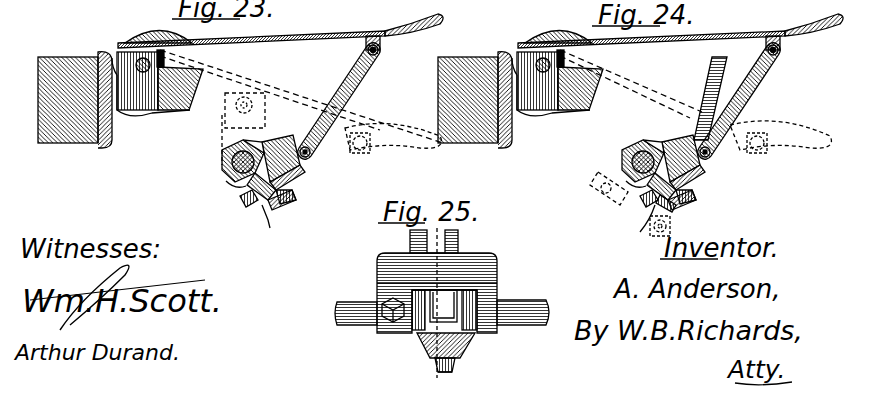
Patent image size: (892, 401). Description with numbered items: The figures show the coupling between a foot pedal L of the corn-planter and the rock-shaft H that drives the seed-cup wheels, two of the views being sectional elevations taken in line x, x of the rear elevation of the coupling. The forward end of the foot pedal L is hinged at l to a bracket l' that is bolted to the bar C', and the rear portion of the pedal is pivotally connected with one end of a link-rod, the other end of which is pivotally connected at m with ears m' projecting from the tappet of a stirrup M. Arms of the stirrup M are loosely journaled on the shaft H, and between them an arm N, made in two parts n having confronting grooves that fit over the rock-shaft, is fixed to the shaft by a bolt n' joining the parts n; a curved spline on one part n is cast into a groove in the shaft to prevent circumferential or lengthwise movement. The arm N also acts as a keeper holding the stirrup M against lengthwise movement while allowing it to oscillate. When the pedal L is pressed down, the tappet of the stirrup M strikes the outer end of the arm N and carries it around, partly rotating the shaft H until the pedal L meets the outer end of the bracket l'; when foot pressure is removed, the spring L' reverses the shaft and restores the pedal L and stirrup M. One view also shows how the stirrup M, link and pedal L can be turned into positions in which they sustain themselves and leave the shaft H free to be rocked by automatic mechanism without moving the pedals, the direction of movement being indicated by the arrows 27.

In FIG. 23, the bar C' is at (75, 90).
In FIG. 24, the bar C' is at (491, 90).
In FIG. 23, the hinge l is at (130, 59).
In FIG. 24, the hinge l is at (538, 80).
In FIG. 23, the bracket l' is at (153, 109).
In FIG. 24, the bracket l' is at (553, 107).
In FIG. 23, the foot pedal L is at (280, 30).
In FIG. 24, the foot pedal L is at (680, 25).
In FIG. 24, the spring L' is at (704, 98).
In FIG. 23, the direction arrow 27 is at (336, 96).
In FIG. 23, the stirrup M is at (252, 138).
In FIG. 24, the stirrup M is at (714, 166).
In FIG. 25, the stirrup M is at (424, 293).
In FIG. 23, the pivot connection m is at (305, 173).
In FIG. 24, the pivot connection m is at (707, 163).
In FIG. 23, the ears m' is at (301, 186).
In FIG. 24, the ears m' is at (668, 155).
In FIG. 25, the ears m' is at (435, 244).
In FIG. 23, the rock-shaft H is at (222, 162).
In FIG. 24, the rock-shaft H is at (625, 156).
In FIG. 25, the rock-shaft H is at (337, 312).
In FIG. 23, the parts of arm n is at (252, 206).
In FIG. 24, the parts of arm n is at (692, 213).
In FIG. 25, the parts of arm n is at (463, 357).
In FIG. 23, the bolt n' is at (274, 224).
In FIG. 24, the bolt n' is at (643, 226).
In FIG. 25, the bolt n' is at (464, 370).
In FIG. 24, the arm N is at (688, 193).
In FIG. 25, the arm N is at (420, 345).
In FIG. 25, the section line x is at (427, 227).